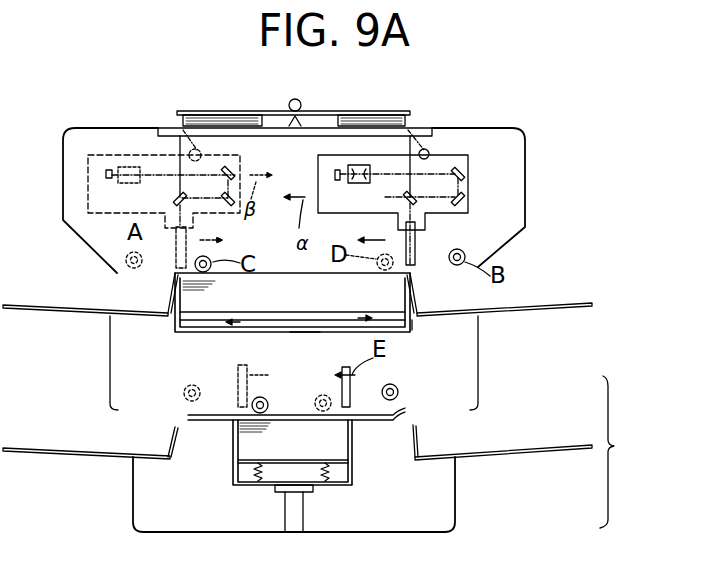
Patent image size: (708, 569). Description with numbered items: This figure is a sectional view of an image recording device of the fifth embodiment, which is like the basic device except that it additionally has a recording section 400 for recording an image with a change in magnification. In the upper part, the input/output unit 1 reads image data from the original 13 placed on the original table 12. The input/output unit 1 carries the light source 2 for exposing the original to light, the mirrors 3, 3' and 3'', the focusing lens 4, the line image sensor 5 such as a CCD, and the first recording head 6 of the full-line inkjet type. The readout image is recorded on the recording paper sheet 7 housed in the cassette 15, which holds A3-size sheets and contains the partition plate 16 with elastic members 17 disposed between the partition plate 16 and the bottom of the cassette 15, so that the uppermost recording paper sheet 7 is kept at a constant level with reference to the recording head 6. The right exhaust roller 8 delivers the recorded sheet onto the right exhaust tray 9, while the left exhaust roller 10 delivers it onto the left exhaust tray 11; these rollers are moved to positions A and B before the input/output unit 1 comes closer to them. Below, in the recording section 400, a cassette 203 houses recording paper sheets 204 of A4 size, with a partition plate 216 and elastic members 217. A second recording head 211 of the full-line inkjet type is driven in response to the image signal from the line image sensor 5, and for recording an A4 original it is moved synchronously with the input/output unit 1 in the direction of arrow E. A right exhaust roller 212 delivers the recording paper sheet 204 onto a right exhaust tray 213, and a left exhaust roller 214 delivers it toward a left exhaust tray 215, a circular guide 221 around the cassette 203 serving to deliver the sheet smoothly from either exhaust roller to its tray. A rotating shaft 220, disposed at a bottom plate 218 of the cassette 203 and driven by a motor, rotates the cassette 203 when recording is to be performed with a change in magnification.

The input/output unit 1 is at (470, 168).
The light source 2 is at (430, 153).
The mirror 3 is at (480, 185).
The mirror 3' is at (482, 212).
The mirror 3'' is at (390, 197).
The focusing lens 4 is at (358, 165).
The line image sensor 5 is at (335, 172).
The first recording head 6 is at (415, 245).
The recording paper sheet 7 is at (270, 272).
The right exhaust roller 8 is at (396, 266).
The right exhaust tray 9 is at (540, 303).
The left exhaust roller 10 is at (130, 256).
The left exhaust tray 11 is at (45, 304).
The original table 12 is at (166, 128).
The original 13 is at (208, 111).
The cassette 15 is at (418, 324).
The partition plate 16 is at (303, 333).
The elastic members 17 is at (218, 320).
The cassette 203 is at (352, 470).
The recording paper sheets 204 is at (345, 447).
The recording head 211 is at (352, 380).
The right exhaust roller 212 is at (320, 395).
The right exhaust tray 213 is at (553, 445).
The left exhaust roller 214 is at (183, 392).
The left exhaust tray 215 is at (44, 448).
The partition plate 216 is at (248, 468).
The elastic members 217 is at (252, 478).
The bottom plate 218 is at (268, 490).
The rotating shaft 220 is at (303, 516).
The circular guide 221 is at (210, 415).
The recording section 400 is at (632, 452).